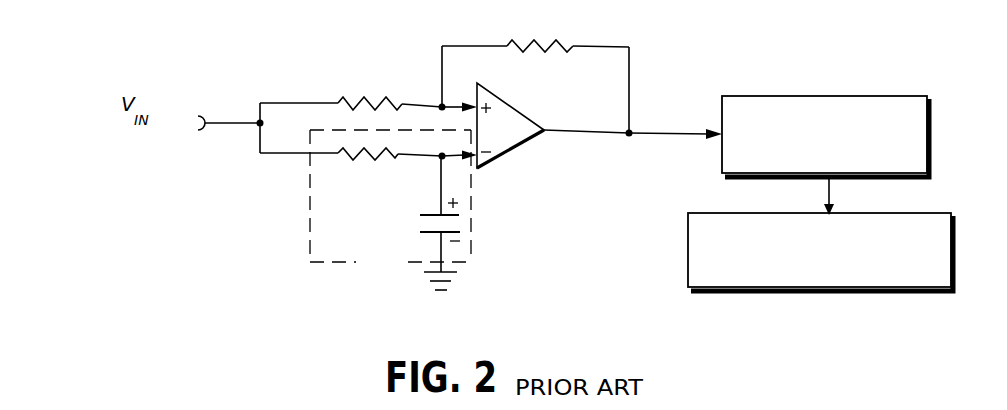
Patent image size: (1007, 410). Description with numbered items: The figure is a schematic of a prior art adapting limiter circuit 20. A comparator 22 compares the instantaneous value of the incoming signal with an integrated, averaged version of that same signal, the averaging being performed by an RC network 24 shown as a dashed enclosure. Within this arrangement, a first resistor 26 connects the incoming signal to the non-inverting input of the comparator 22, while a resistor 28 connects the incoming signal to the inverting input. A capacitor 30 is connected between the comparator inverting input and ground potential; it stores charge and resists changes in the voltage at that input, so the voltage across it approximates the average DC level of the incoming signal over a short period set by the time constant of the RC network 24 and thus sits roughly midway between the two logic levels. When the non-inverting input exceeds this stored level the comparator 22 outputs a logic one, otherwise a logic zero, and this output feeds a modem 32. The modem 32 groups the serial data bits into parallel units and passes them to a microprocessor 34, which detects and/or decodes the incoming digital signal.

The adapting limiter circuit 20 is at (262, 62).
The comparator 22 is at (511, 147).
The RC network 24 is at (310, 250).
The first resistor 26 is at (359, 100).
The resistor 28 is at (343, 160).
The capacitor 30 is at (422, 224).
The modem 32 is at (758, 96).
The microprocessor 34 is at (765, 289).